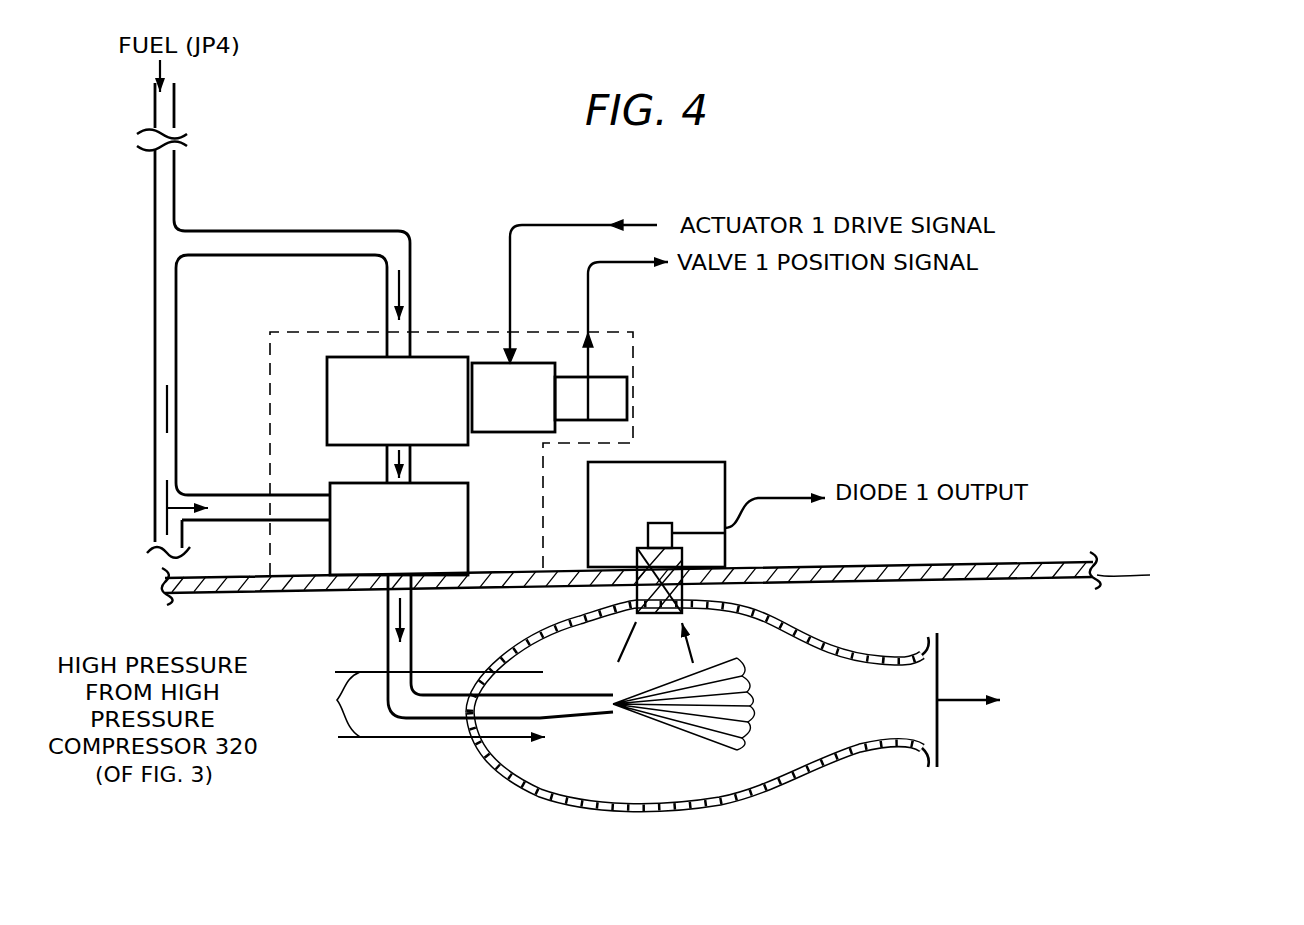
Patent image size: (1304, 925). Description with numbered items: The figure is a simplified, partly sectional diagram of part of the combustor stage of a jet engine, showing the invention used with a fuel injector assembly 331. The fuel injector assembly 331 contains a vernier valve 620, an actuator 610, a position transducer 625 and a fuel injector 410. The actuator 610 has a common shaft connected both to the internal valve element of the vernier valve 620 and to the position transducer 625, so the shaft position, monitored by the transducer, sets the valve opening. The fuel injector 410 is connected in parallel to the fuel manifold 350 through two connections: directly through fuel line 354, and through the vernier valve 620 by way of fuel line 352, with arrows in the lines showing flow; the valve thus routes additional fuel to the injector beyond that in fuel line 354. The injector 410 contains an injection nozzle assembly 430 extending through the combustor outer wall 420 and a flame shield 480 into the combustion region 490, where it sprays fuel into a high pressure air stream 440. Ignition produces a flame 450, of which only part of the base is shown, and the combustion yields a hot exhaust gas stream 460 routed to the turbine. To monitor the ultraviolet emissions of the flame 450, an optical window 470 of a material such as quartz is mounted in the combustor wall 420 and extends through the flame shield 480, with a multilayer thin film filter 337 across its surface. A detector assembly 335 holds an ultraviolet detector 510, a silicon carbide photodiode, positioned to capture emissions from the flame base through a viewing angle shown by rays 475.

The fuel manifold 350 is at (174, 165).
The fuel line 352 is at (318, 240).
The fuel line 354 is at (240, 512).
The fuel injector assembly 331 is at (303, 332).
The vernier valve 620 is at (420, 357).
The actuator 610 is at (543, 417).
The position transducer 625 is at (620, 413).
The fuel injector 410 is at (330, 490).
The detector assembly 335 is at (688, 462).
The ultraviolet detector 510 is at (670, 523).
The multilayer thin film filter 337 is at (682, 548).
The combustor outer wall 420 is at (985, 566).
The optical window 470 is at (637, 590).
The rays 475 is at (618, 660).
The injection nozzle assembly 430 is at (450, 707).
The high pressure air stream 440 is at (330, 702).
The flame 450 is at (712, 732).
The combustion region 490 is at (800, 713).
The flame shield 480 is at (857, 750).
The hot exhaust gas stream 460 is at (957, 698).